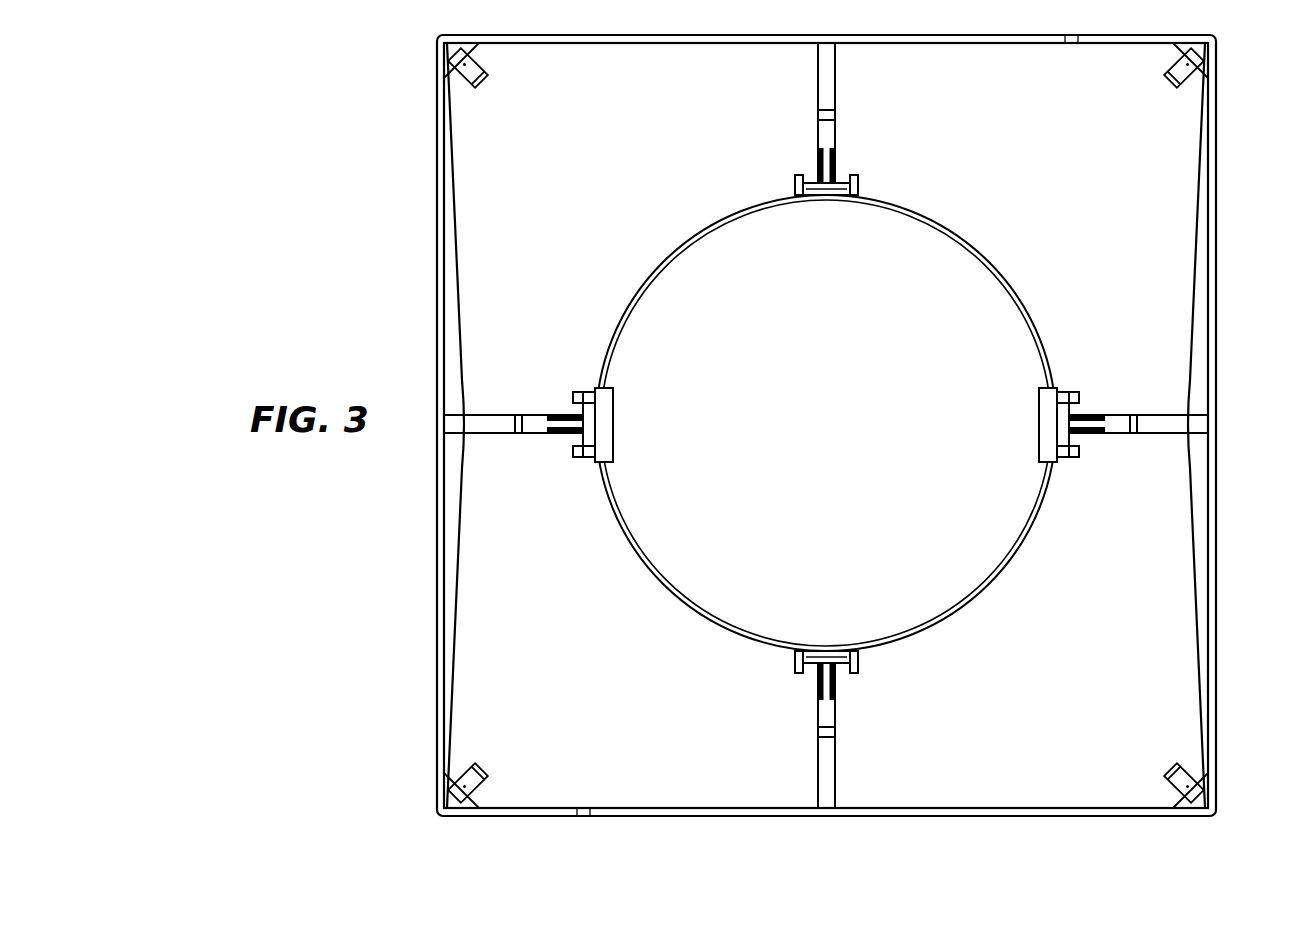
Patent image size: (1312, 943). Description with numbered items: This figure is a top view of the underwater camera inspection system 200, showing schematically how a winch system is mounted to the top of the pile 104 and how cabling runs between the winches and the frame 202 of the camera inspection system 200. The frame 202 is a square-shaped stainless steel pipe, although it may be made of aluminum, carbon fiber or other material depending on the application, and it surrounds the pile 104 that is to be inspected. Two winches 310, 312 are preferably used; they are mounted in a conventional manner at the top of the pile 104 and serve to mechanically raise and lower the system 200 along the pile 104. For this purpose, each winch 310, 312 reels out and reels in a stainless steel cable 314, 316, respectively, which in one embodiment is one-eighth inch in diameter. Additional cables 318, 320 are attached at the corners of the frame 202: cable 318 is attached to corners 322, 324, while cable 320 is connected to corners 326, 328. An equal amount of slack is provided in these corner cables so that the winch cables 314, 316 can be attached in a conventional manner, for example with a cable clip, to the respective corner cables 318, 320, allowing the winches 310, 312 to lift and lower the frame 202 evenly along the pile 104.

The underwater camera inspection system 200 is at (300, 82).
The frame 202 is at (442, 305).
The pile 104 is at (640, 288).
The winch 310 is at (614, 400).
The winch 312 is at (1040, 412).
The stainless steel cable 314 is at (490, 413).
The stainless steel cable 316 is at (1168, 418).
The cable 318 is at (459, 510).
The cable 320 is at (1194, 510).
The corner 322 is at (438, 813).
The corner 324 is at (437, 38).
The corner 326 is at (1216, 812).
The corner 328 is at (1216, 38).